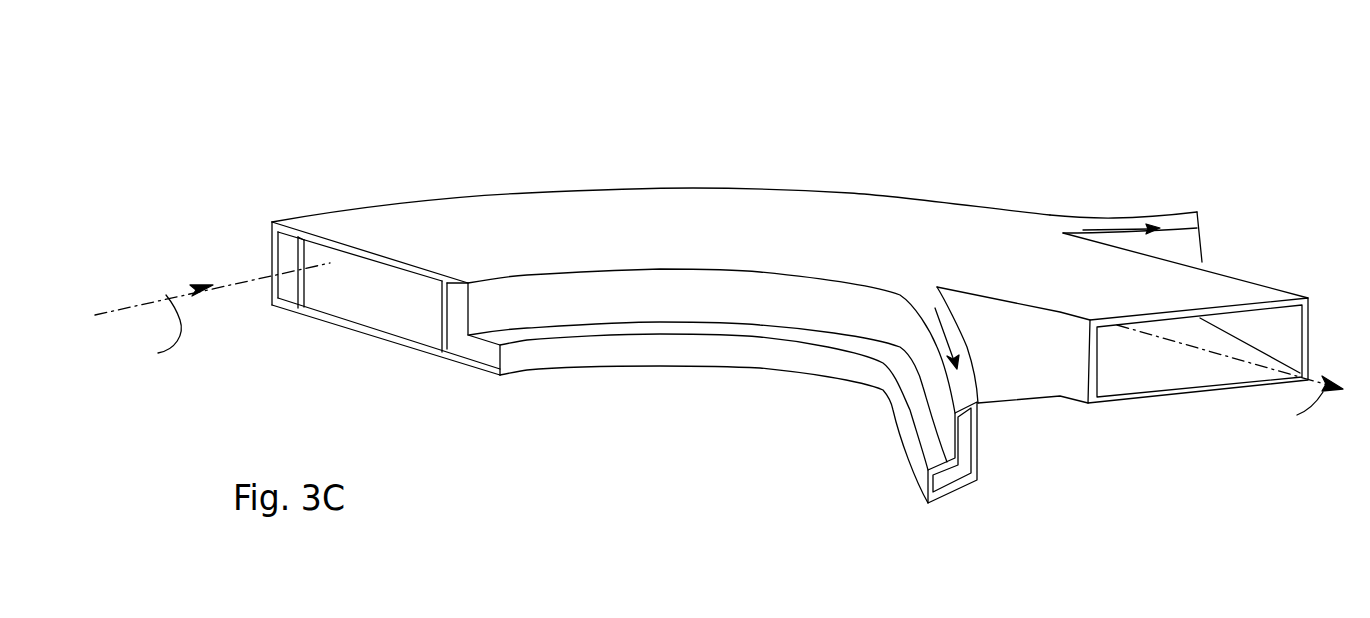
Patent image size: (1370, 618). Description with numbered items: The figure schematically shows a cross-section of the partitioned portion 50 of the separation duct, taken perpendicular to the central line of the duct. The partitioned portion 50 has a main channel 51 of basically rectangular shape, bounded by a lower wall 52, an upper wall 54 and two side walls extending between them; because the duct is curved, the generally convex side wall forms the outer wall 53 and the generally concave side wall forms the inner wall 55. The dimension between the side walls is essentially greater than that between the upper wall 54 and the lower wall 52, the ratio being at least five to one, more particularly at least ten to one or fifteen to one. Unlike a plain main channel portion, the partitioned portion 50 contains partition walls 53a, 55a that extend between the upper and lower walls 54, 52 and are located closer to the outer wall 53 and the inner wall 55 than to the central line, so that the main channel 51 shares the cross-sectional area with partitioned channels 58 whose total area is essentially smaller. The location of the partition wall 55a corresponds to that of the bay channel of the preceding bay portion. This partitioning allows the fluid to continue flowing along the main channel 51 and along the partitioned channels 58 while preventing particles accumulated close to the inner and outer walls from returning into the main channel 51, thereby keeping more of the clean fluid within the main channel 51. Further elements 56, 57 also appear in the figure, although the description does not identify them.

The partitioned portion 50 is at (588, 157).
The main channel 51 is at (383, 313).
The lower wall 52 is at (380, 340).
The outer side wall 53 is at (273, 264).
The partition wall 53a is at (272, 290).
The upper wall 54 is at (383, 232).
The inner side wall 55 is at (648, 307).
The partition wall 55a is at (443, 322).
The step portion 56 is at (753, 333).
The lower skirt portion 57 is at (547, 350).
The partitioned channel 58 is at (462, 355).